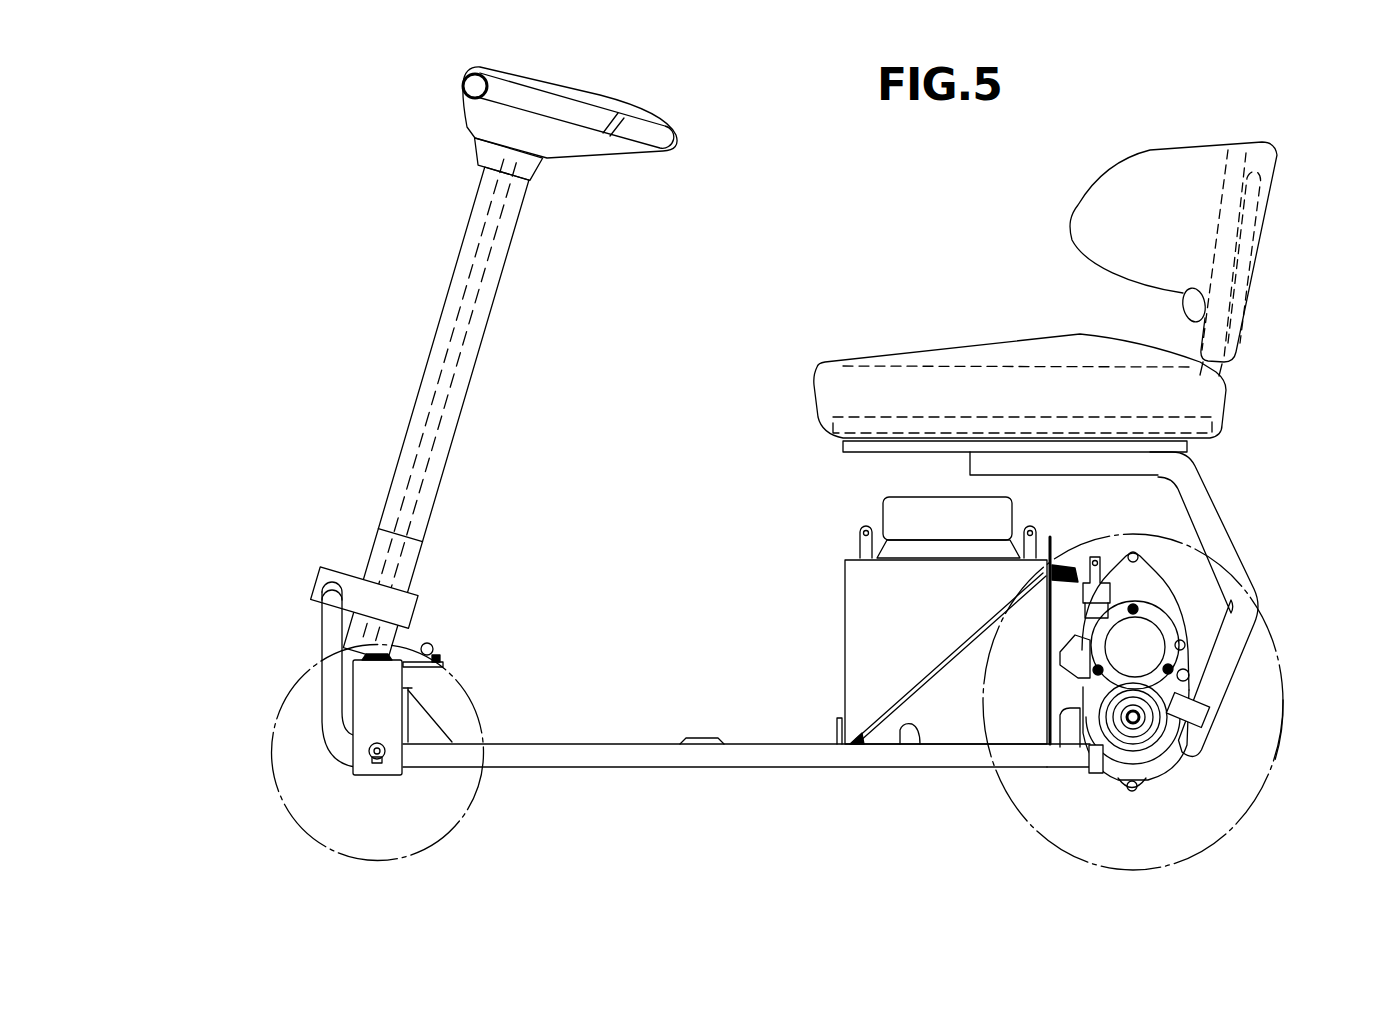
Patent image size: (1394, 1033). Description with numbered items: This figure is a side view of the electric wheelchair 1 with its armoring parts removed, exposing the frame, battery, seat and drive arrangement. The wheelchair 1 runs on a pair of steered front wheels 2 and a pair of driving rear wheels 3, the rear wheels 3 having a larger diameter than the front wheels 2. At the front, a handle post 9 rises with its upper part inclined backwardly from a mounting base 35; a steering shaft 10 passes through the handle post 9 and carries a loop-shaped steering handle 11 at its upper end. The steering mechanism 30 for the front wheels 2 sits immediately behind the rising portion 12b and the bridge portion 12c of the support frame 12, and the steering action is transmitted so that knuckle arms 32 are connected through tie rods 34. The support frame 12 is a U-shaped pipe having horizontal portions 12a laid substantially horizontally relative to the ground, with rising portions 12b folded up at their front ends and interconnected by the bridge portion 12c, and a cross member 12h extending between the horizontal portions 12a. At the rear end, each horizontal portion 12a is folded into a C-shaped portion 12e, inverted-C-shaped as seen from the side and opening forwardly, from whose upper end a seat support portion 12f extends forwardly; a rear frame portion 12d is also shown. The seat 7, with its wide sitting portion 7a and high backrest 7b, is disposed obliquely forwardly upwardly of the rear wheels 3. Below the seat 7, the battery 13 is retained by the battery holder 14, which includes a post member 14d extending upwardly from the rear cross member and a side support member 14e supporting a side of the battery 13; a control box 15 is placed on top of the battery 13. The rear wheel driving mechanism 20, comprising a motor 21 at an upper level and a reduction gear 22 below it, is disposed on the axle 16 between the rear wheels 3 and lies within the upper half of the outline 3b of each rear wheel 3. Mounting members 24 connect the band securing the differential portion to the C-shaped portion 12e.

The electric wheelchair 1 is at (722, 216).
The front wheel 2 is at (270, 760).
The rear wheel 3 is at (1255, 800).
The outline of rear wheel 3b is at (1278, 678).
The seat 7 is at (1045, 242).
The sitting portion 7a is at (882, 354).
The backrest 7b is at (1177, 168).
The handle post 9 is at (465, 352).
The steering shaft 10 is at (458, 298).
The steering handle 11 is at (598, 118).
The support frame 12 is at (746, 748).
The horizontal portion 12a is at (712, 767).
The rising portion 12b is at (332, 645).
The bridge portion 12c is at (322, 598).
The rear frame portion 12d is at (1063, 760).
The C-shaped portion 12e is at (1243, 570).
The seat support portion 12f is at (1037, 465).
The cross member 12h is at (703, 737).
The battery 13 is at (862, 607).
The battery holder 14 is at (989, 688).
The post member 14d is at (1048, 568).
The side support member 14e is at (982, 630).
The control box 15 is at (898, 513).
The axle 16 is at (1137, 722).
The rear wheel driving mechanism 20 is at (1068, 623).
The motor 21 is at (1202, 686).
The reduction gear 22 is at (1140, 643).
The mounting member 24 is at (1205, 712).
The steering mechanism 30 is at (422, 689).
The knuckle arm 32 is at (388, 727).
The tie rod 34 is at (440, 652).
The mounting base 35 is at (415, 600).